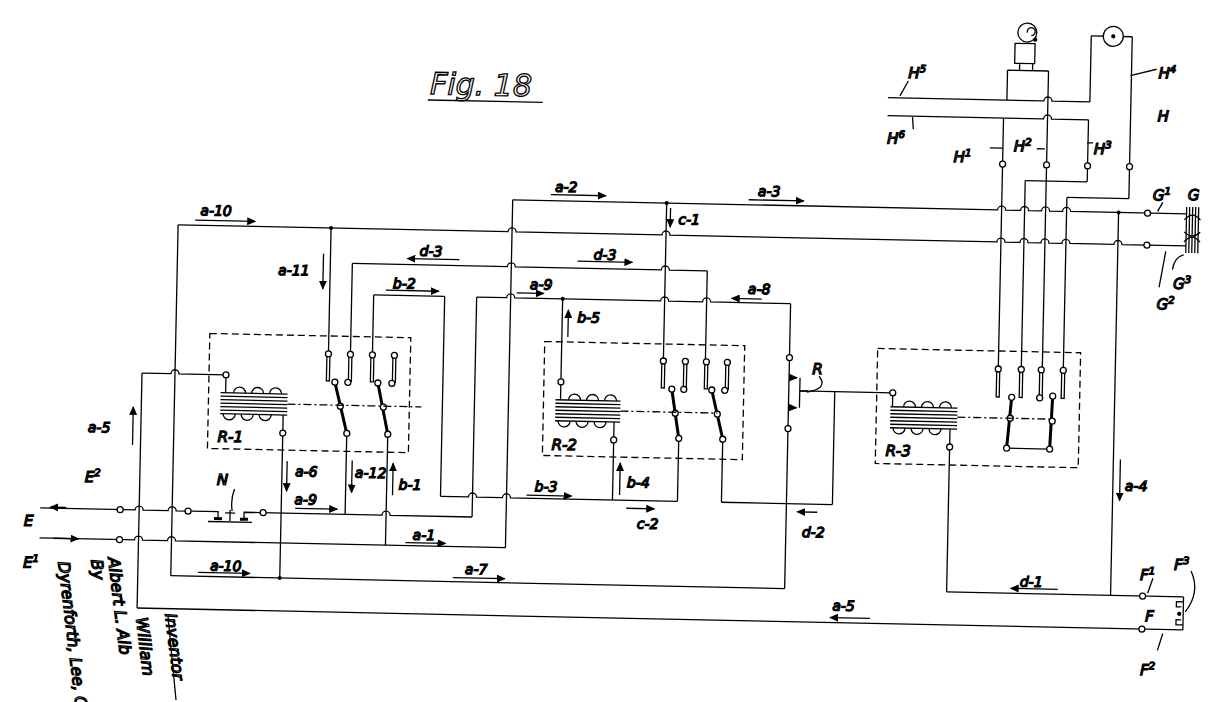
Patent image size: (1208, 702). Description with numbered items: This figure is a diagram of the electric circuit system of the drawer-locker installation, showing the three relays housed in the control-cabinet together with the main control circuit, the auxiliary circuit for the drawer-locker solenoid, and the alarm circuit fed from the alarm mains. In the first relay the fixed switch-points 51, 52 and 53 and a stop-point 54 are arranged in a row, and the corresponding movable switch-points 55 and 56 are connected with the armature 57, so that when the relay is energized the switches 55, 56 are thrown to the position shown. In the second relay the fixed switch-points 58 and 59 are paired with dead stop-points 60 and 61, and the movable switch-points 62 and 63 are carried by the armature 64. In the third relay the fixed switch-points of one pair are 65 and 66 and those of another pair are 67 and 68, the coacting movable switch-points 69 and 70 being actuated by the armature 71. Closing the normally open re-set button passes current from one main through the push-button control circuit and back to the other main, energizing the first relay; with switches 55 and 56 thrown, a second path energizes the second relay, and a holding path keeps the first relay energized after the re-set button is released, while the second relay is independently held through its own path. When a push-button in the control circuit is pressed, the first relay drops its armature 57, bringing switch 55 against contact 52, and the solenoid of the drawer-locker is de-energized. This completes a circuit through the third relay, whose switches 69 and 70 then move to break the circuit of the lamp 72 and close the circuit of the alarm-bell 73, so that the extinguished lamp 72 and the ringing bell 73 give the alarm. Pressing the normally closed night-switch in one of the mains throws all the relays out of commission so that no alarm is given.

The fixed switch-point 51 is at (331, 356).
The fixed switch-point 52 is at (348, 401).
The fixed switch-point 53 is at (376, 352).
The stop-point 54 is at (398, 369).
The movable switch-point 55 is at (330, 402).
The movable switch-point 56 is at (383, 380).
The armature 57 is at (338, 380).
The fixed switch-point 58 is at (665, 350).
The fixed switch-point 59 is at (711, 352).
The dead stop-point 60 is at (688, 350).
The dead stop-point 61 is at (733, 365).
The movable switch-point 62 is at (674, 394).
The movable switch-point 63 is at (724, 392).
The armature 64 is at (659, 405).
The fixed switch-point 65 is at (1021, 366).
The fixed switch-point 66 is at (1067, 355).
The fixed switch-point 67 is at (1001, 356).
The fixed switch-point 68 is at (1043, 375).
The movable switch-point 69 is at (1012, 386).
The movable switch-point 70 is at (1057, 400).
The armature 71 is at (975, 402).
The lamp 72 is at (1120, 16).
The alarm-bell 73 is at (1011, 12).